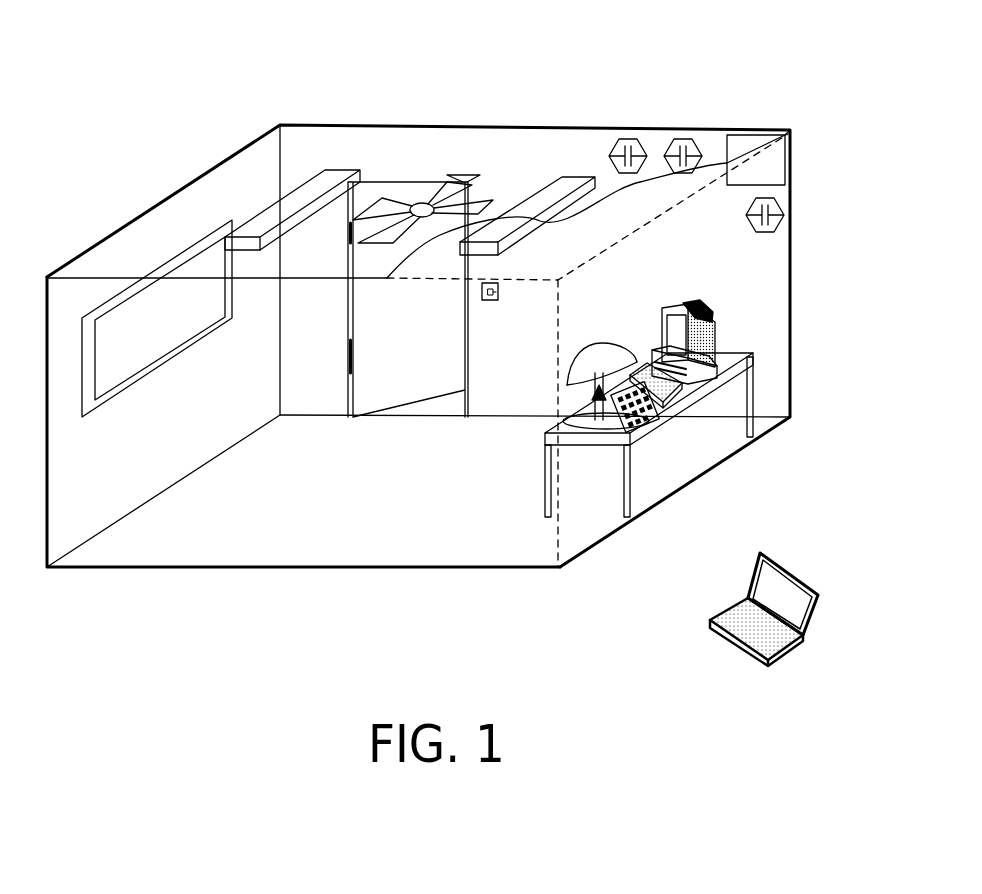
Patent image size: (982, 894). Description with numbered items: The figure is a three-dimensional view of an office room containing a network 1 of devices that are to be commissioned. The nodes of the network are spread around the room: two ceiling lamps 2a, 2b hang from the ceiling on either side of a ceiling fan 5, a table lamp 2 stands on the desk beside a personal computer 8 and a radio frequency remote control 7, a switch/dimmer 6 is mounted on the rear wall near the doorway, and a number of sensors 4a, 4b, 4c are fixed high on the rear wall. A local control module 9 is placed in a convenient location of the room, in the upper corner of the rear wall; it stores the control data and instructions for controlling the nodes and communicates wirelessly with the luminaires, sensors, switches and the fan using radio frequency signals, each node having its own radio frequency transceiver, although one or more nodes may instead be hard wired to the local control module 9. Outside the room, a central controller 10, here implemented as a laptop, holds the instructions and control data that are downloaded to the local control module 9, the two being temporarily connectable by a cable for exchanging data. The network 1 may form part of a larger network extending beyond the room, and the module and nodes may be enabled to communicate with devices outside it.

The network of devices 1 is at (208, 92).
The ceiling lamp 2a is at (310, 192).
The ceiling lamp 2b is at (525, 214).
The table lamp 2 is at (602, 376).
The sensor 4a is at (638, 150).
The sensor 4b is at (692, 150).
The sensor 4c is at (783, 215).
The ceiling fan 5 is at (423, 203).
The switch/dimmer 6 is at (497, 300).
The radio frequency remote control 7 is at (650, 421).
The personal computer 8 is at (663, 325).
The local control module 9 is at (763, 168).
The central controller 10 is at (764, 590).